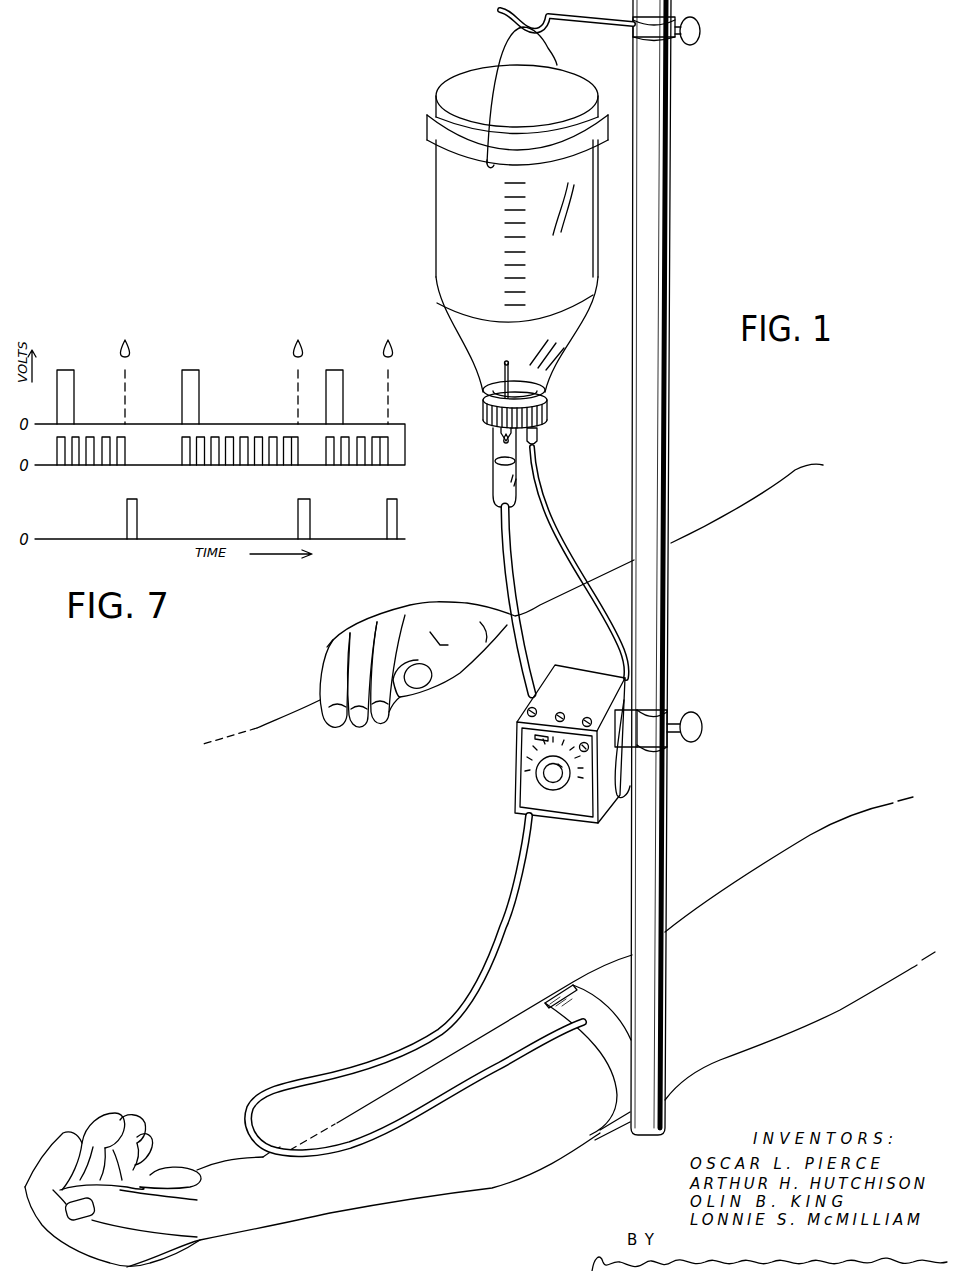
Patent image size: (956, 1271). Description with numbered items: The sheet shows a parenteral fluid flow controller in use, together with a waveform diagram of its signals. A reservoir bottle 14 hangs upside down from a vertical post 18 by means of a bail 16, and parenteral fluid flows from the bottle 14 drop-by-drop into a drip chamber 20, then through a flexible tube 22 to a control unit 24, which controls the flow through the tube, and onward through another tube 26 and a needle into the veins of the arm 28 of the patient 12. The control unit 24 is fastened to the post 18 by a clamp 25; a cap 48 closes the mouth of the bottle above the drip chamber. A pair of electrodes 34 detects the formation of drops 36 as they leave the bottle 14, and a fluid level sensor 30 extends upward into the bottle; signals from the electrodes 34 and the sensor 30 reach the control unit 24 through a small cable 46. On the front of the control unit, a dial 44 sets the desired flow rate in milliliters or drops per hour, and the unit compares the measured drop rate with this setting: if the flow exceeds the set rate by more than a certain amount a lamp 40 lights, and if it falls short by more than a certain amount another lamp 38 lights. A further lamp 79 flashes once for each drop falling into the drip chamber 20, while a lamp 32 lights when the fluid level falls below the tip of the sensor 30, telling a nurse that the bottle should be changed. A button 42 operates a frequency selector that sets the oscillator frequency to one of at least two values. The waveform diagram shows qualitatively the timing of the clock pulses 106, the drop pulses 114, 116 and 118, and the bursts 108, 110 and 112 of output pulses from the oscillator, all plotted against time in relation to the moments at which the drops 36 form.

In FIG. 1, the patient 12 is at (796, 462).
In FIG. 1, the reservoir bottle 14 is at (437, 208).
In FIG. 1, the bail 16 is at (505, 42).
In FIG. 1, the vertical post 18 is at (656, 130).
In FIG. 1, the drip chamber 20 is at (494, 490).
In FIG. 1, the flexible tube 22 is at (504, 540).
In FIG. 1, the control unit 24 is at (568, 826).
In FIG. 1, the clamp 25 is at (670, 717).
In FIG. 1, the tube 26 is at (512, 885).
In FIG. 1, the arm 28 is at (603, 965).
In FIG. 1, the fluid level sensor 30 is at (502, 385).
In FIG. 1, the lamp 32 is at (588, 717).
In FIG. 1, the electrodes 34 is at (500, 432).
In FIG. 1, the drops 36 is at (505, 443).
In FIG. 7, the drops 36 is at (128, 345).
In FIG. 1, the lamp 38 is at (528, 711).
In FIG. 1, the lamp 40 is at (555, 718).
In FIG. 1, the button 42 is at (535, 738).
In FIG. 1, the dial 44 is at (536, 773).
In FIG. 1, the cable 46 is at (546, 508).
In FIG. 1, the container cap with drop sensor 48 is at (548, 414).
In FIG. 1, the lamp 79 is at (588, 749).
In FIG. 7, the clock pulses 106 is at (66, 370).
In FIG. 7, the burst of output pulses 108 is at (102, 469).
In FIG. 7, the burst of output pulses 110 is at (245, 469).
In FIG. 7, the burst of output pulses 112 is at (375, 469).
In FIG. 7, the drop pulse 114 is at (125, 513).
In FIG. 7, the drop pulse 116 is at (296, 512).
In FIG. 7, the drop pulse 118 is at (385, 512).